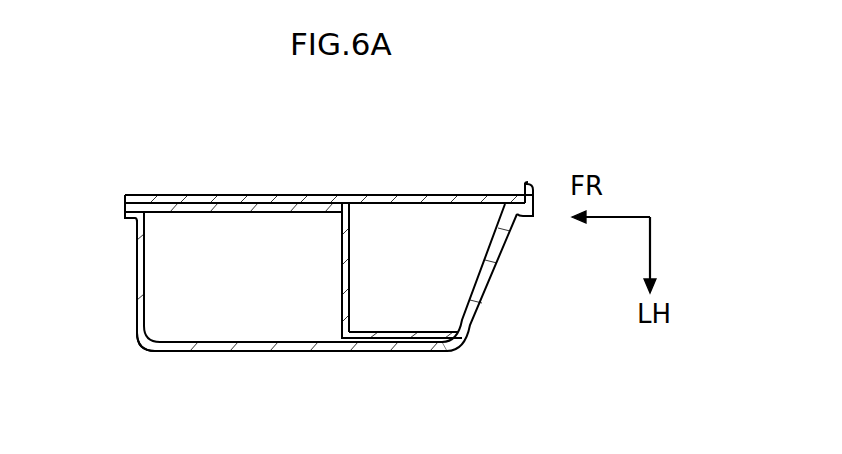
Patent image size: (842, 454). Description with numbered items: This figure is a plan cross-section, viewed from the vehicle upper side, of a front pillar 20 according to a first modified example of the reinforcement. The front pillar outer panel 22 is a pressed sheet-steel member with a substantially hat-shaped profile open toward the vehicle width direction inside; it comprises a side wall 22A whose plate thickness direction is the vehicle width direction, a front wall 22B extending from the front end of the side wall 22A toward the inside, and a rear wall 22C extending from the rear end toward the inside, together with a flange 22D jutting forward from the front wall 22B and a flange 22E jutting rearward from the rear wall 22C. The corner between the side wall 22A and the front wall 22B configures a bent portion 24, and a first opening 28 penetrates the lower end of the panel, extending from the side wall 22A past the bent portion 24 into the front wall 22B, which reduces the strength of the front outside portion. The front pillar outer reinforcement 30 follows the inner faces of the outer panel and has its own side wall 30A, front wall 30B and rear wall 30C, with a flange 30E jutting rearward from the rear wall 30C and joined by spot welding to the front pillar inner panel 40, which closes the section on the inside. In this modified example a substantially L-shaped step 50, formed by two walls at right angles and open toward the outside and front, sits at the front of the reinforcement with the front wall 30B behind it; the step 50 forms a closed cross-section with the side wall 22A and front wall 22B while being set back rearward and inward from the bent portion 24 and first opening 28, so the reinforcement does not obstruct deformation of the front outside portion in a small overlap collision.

The front pillar 20 is at (466, 350).
The front pillar outer panel 22 is at (319, 311).
The side wall 22A is at (392, 355).
The front wall 22B is at (144, 266).
The rear wall 22C is at (495, 280).
The flange 22D is at (127, 222).
The flange 22E is at (528, 222).
The bent portion 24 is at (140, 344).
The first opening 28 is at (283, 344).
The front pillar outer reinforcement 30 is at (341, 232).
The side wall 30A is at (392, 332).
The front wall 30B is at (342, 246).
The rear wall 30C is at (487, 229).
The flange 30E is at (528, 184).
The front pillar inner panel 40 is at (420, 194).
The step 50 is at (308, 217).